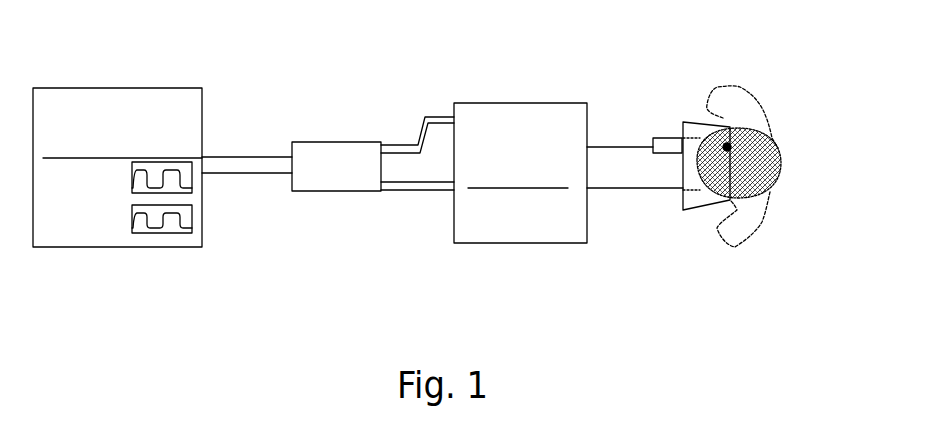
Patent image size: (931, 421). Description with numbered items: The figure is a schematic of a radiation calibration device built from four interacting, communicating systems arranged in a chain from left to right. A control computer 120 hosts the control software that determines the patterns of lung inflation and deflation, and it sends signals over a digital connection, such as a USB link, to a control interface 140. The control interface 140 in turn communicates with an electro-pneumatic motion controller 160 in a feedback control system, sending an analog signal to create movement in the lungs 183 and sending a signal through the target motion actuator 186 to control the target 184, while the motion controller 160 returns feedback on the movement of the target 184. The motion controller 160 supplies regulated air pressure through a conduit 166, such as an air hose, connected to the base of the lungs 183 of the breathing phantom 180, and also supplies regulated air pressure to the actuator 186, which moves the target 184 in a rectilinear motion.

The control computer 120 is at (148, 112).
The control interface 140 is at (330, 152).
The electro-pneumatic motion controller 160 is at (507, 217).
The conduit 166 is at (638, 187).
The breathing phantom 180 is at (777, 145).
The lungs 183 is at (753, 182).
The target 184 is at (727, 147).
The target motion actuator 186 is at (670, 142).